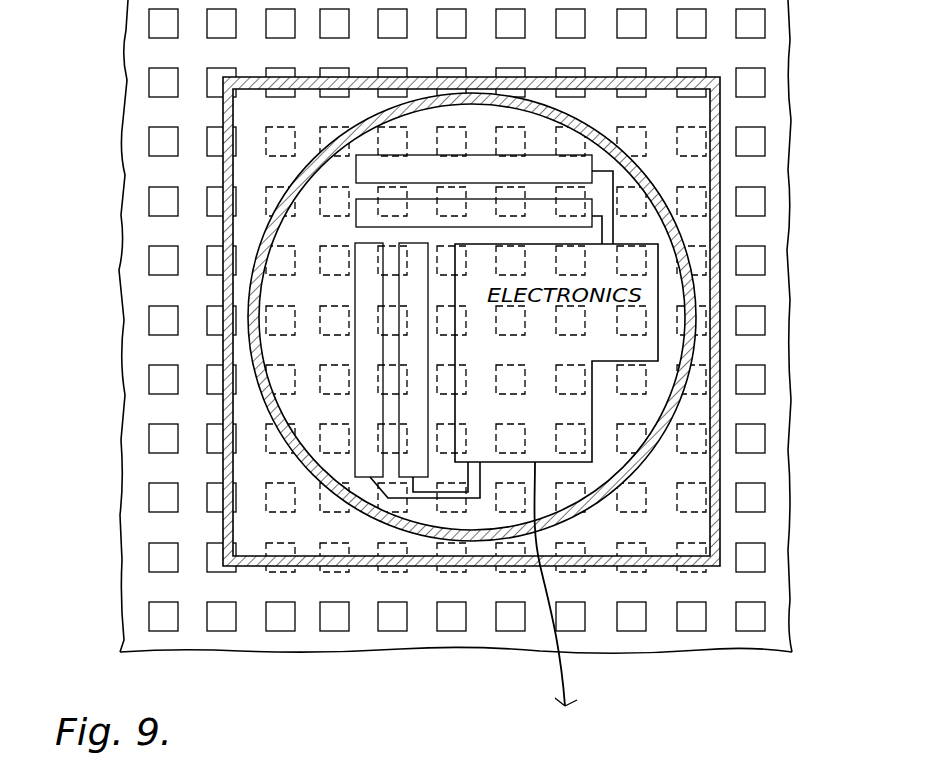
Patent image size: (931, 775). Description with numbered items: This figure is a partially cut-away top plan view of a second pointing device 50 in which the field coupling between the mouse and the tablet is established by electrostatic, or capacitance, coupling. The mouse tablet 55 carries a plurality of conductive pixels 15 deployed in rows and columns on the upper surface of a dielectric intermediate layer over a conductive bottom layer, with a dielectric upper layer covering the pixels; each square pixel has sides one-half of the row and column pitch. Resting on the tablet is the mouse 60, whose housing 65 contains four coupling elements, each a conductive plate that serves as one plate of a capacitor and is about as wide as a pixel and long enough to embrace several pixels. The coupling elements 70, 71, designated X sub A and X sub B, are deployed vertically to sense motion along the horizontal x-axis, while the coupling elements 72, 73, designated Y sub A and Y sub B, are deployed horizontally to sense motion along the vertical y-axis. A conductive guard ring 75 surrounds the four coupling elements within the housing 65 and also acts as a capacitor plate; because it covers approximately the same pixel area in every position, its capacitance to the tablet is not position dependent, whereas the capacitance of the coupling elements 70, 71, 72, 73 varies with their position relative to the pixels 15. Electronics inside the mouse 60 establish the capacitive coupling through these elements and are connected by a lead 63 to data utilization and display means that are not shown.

The pixels 15 is at (160, 615).
The pointing device 50 is at (95, 98).
The mouse tablet 55 is at (118, 261).
The mouse 60 is at (726, 120).
The lead 63 is at (568, 676).
The housing 65 is at (720, 355).
The coupling element 70 is at (363, 332).
The coupling element 71 is at (407, 412).
The coupling element 72 is at (368, 203).
The coupling element 73 is at (537, 163).
The guard ring 75 is at (300, 175).